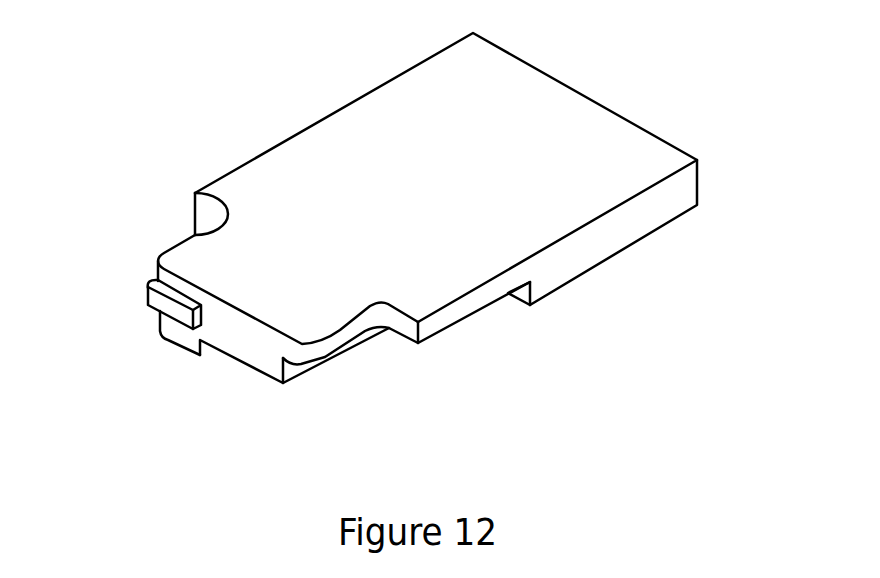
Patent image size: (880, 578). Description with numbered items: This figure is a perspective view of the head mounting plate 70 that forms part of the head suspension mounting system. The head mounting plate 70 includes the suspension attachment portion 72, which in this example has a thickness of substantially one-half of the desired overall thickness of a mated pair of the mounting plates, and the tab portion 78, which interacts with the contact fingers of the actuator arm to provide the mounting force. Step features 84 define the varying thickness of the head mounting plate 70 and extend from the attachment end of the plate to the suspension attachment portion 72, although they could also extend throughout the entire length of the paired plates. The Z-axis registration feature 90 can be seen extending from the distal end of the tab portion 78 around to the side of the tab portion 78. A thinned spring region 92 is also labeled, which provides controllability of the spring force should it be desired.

The head mounting plate 70 is at (222, 118).
The suspension attachment portion 72 is at (597, 157).
The tab portion 78 is at (268, 270).
The step features 84 is at (210, 348).
The Z-axis registration feature 90 is at (172, 312).
The thinned spring region 92 is at (136, 214).